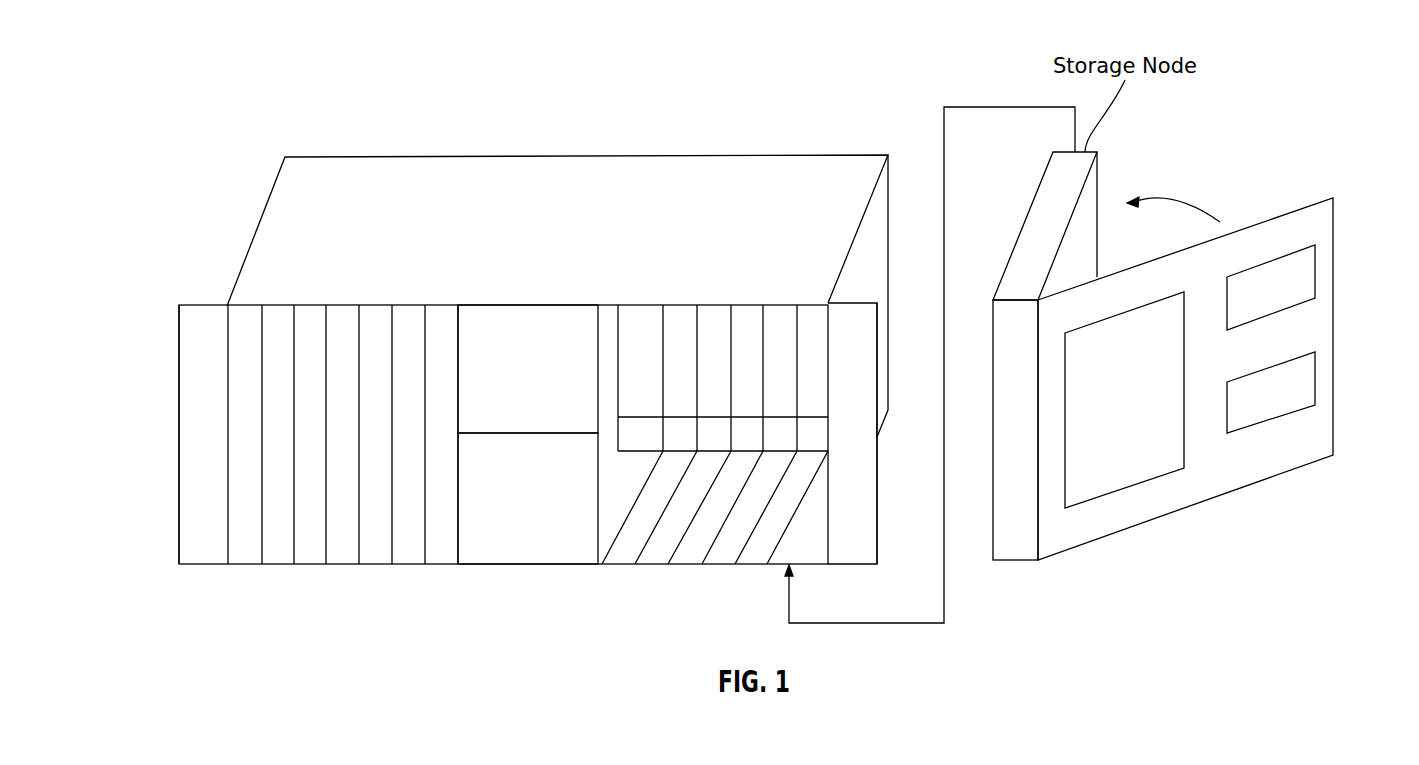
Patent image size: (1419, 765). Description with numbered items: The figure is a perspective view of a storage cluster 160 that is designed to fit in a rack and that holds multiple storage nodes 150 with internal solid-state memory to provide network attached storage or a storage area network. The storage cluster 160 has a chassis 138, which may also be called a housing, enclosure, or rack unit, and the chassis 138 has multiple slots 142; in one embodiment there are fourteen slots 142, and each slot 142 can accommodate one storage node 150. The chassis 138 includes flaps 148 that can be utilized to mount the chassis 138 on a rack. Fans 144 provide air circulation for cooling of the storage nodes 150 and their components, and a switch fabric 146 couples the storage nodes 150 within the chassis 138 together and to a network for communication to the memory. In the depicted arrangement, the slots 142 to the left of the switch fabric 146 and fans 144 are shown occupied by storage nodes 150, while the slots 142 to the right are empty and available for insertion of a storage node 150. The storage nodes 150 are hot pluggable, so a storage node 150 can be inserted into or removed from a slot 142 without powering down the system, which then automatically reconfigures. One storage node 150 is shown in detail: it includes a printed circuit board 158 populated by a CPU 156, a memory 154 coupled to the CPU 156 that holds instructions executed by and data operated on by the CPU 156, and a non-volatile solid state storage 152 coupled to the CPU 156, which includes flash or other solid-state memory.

The storage cluster 160 is at (590, 350).
The chassis 138 is at (355, 157).
The switch fabric 146 is at (530, 305).
The fans 144 is at (535, 567).
The flaps 148 is at (179, 435).
The storage node 150 is at (242, 566).
The slot 142 is at (772, 565).
The non-volatile solid state storage 152 is at (1125, 490).
The memory 154 is at (1270, 260).
The CPU 156 is at (1315, 380).
The printed circuit board 158 is at (1333, 239).